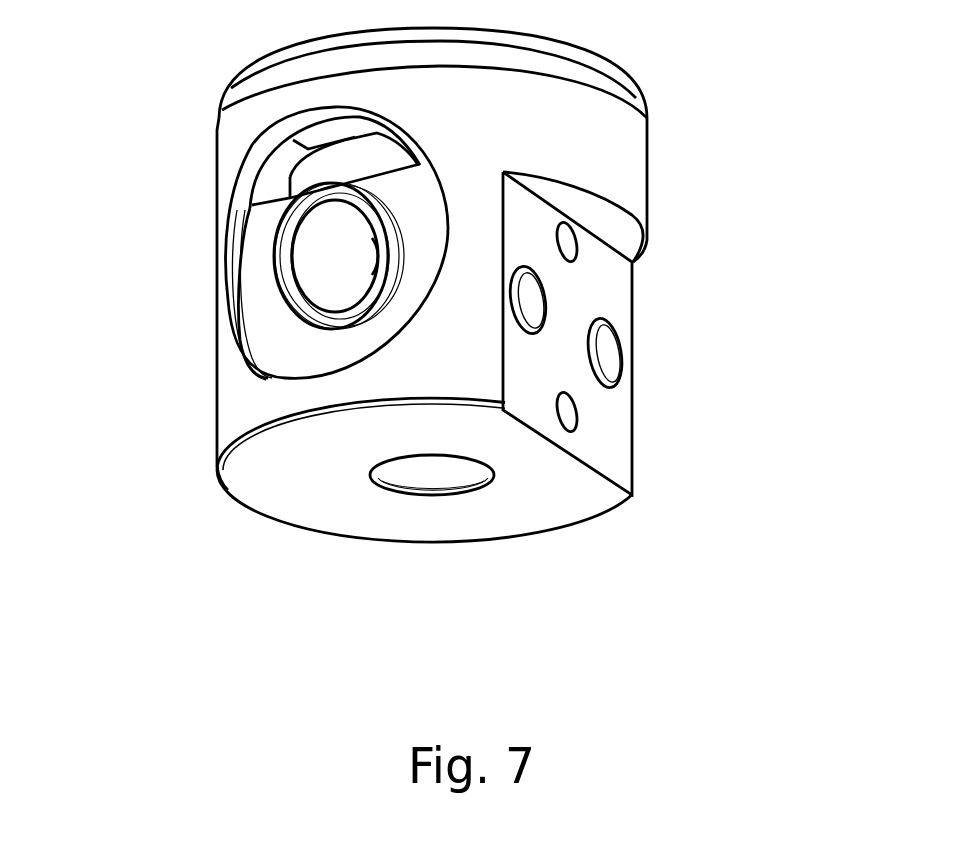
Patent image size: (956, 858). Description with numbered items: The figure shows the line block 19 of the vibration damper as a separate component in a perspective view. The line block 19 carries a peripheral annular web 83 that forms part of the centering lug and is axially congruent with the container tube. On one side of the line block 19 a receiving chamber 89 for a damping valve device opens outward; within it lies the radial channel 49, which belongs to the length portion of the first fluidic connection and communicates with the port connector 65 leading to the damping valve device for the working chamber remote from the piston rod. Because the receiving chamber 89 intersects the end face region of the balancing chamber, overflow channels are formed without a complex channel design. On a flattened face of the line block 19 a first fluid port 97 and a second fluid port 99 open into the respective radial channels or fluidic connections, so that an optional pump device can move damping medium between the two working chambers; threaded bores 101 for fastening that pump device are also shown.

The line block 19 is at (657, 553).
The annular web 83 is at (256, 89).
The receiving chamber 89 is at (297, 353).
The port connector 65 is at (270, 283).
The radial channel 49 is at (340, 256).
The first fluid port 97 is at (523, 302).
The second fluid port 99 is at (600, 355).
The threaded bores 101 is at (577, 247).